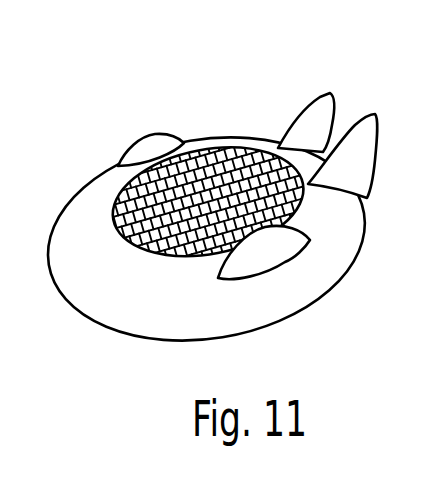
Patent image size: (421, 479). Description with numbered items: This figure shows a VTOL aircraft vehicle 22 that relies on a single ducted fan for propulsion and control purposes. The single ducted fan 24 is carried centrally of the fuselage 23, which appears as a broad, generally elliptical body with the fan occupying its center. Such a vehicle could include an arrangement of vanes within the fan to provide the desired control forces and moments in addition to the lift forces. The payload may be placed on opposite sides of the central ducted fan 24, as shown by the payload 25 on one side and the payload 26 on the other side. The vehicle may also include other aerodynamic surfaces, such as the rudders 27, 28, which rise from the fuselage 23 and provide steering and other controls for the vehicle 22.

The VTOL aircraft vehicle 22 is at (215, 197).
The fuselage 23 is at (110, 302).
The ducted fan 24 is at (227, 157).
The payload 25 is at (152, 144).
The payload 26 is at (285, 278).
The rudder 27 is at (328, 97).
The rudder 28 is at (378, 113).